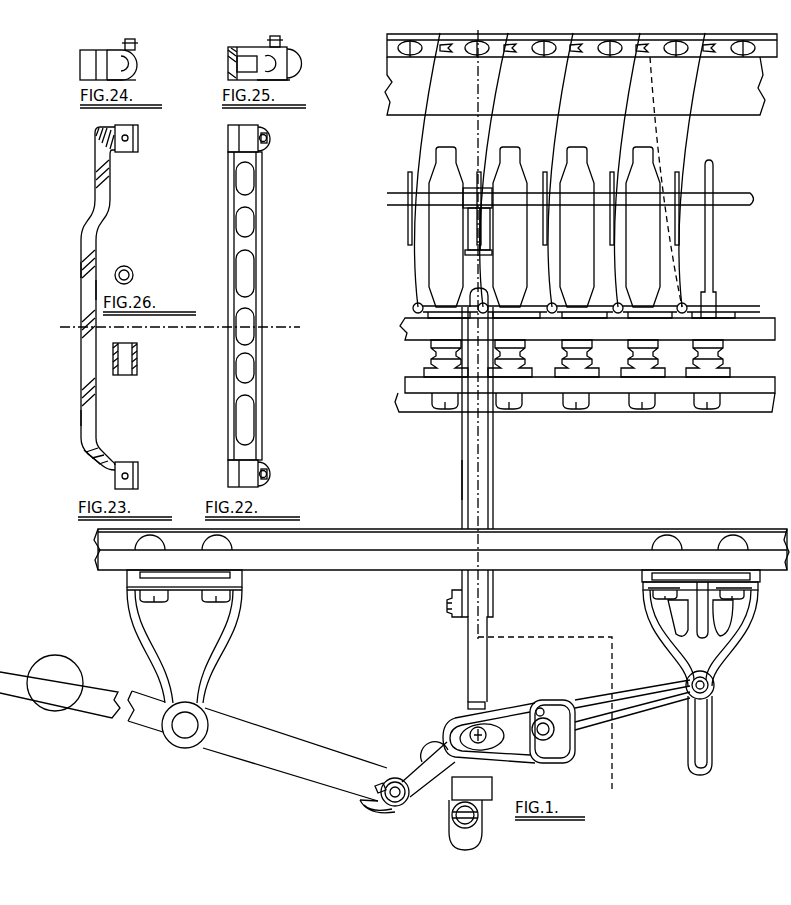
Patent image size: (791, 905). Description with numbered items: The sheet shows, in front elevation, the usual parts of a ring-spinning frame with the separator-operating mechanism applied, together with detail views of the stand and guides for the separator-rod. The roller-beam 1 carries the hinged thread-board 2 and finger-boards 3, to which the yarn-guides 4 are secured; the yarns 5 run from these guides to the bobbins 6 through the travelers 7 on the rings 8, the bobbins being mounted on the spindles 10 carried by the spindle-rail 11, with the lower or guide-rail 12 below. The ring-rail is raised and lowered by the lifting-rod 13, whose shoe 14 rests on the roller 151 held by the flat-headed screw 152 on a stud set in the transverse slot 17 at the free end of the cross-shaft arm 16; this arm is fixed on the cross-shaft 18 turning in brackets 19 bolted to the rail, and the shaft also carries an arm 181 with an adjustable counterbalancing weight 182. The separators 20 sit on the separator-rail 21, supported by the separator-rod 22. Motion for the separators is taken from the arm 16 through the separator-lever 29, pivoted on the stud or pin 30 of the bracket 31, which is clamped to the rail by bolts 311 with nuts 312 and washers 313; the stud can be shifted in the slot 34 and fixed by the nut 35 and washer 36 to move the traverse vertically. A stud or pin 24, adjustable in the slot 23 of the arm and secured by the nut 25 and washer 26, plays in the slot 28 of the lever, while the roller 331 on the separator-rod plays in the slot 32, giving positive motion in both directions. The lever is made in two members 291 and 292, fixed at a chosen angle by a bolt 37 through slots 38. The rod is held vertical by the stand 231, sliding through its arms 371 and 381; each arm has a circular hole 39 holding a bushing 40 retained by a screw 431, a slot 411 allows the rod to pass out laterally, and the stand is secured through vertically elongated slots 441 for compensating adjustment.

In FIG. 1, the roller-beam 1 is at (581, 74).
In FIG. 1, the thread-board 2 is at (542, 413).
In FIG. 1, the finger-boards 3 is at (520, 60).
In FIG. 1, the yarn-guides 4 is at (630, 60).
In FIG. 1, the yarns 5 is at (489, 89).
In FIG. 1, the bobbins 6 is at (448, 146).
In FIG. 1, the travelers 7 is at (413, 303).
In FIG. 1, the rings 8 is at (440, 318).
In FIG. 1, the spindles 10 is at (714, 256).
In FIG. 1, the spindle-rail 11 is at (585, 394).
In FIG. 1, the lower or guide-rail 12 is at (441, 549).
In FIG. 1, the lifting-rod 13 is at (476, 435).
In FIG. 1, the shoe 14 is at (472, 788).
In FIG. 1, the cross-shaft arm 16 is at (295, 754).
In FIG. 1, the transverse slot 17 is at (452, 838).
In FIG. 1, the cross-shaft 18 is at (185, 725).
In FIG. 1, the brackets 19 is at (184, 636).
In FIG. 1, the separators 20 is at (406, 178).
In FIG. 1, the separator-rail 21 is at (388, 203).
In FIG. 1, the separator-rod 22 is at (466, 708).
In FIG. 1, the slot 23 is at (373, 786).
In FIG. 1, the stud or pin 24 is at (397, 781).
In FIG. 1, the nut 25 is at (368, 814).
In FIG. 1, the washer 26 is at (386, 780).
In FIG. 1, the slot 28 is at (436, 755).
In FIG. 1, the separator-lever 29 is at (612, 690).
In FIG. 1, the stud or pin 30 is at (712, 704).
In FIG. 1, the bracket 31 is at (701, 628).
In FIG. 1, the slot 32 is at (500, 716).
In FIG. 1, the slot 34 is at (707, 752).
In FIG. 1, the nut 35 is at (722, 694).
In FIG. 1, the washer 36 is at (715, 682).
In FIG. 1, the bolt 37 is at (555, 716).
In FIG. 1, the slots 38 is at (550, 699).
In FIG. 24, the vertical circular hole 39 is at (129, 64).
In FIG. 25, the vertical circular hole 39 is at (274, 64).
In FIG. 23, the vertical circular hole 39 is at (128, 146).
In FIG. 26, the bushing 40 is at (187, 270).
In FIG. 1, the roller 151 is at (451, 815).
In FIG. 1, the flat-headed screw 152 is at (472, 820).
In FIG. 1, the arm 181 is at (98, 712).
In FIG. 1, the weight 182 is at (55, 683).
In FIG. 23, the stand 231 is at (93, 290).
In FIG. 22, the stand 231 is at (249, 304).
In FIG. 1, the stand 231 is at (460, 476).
In FIG. 1, the member 291 is at (357, 801).
In FIG. 1, the member 292 is at (522, 708).
In FIG. 1, the bolts 311 is at (690, 532).
In FIG. 1, the nuts 312 is at (657, 596).
In FIG. 1, the washers 313 is at (650, 588).
In FIG. 1, the roller 331 is at (465, 728).
In FIG. 24, the arm 371 is at (78, 59).
In FIG. 23, the arm 371 is at (93, 149).
In FIG. 22, the arm 371 is at (263, 151).
In FIG. 25, the arm 381 is at (226, 53).
In FIG. 23, the arm 381 is at (88, 460).
In FIG. 22, the arm 381 is at (262, 461).
In FIG. 24, the slot 411 is at (150, 79).
In FIG. 25, the slot 411 is at (292, 77).
In FIG. 22, the slot 411 is at (240, 138).
In FIG. 24, the screw 431 is at (137, 42).
In FIG. 25, the screw 431 is at (282, 41).
In FIG. 22, the screw 431 is at (268, 133).
In FIG. 1, the screw 431 is at (445, 603).
In FIG. 23, the vertically elongated slots 441 is at (81, 269).
In FIG. 22, the vertically elongated slots 441 is at (244, 271).